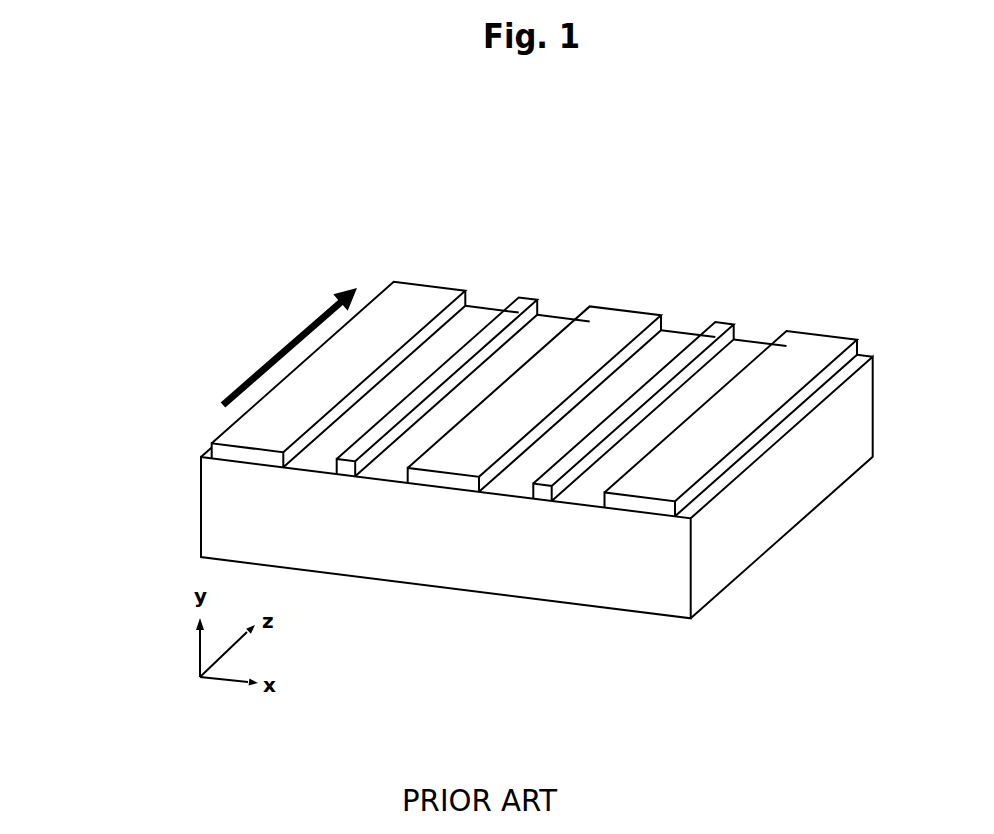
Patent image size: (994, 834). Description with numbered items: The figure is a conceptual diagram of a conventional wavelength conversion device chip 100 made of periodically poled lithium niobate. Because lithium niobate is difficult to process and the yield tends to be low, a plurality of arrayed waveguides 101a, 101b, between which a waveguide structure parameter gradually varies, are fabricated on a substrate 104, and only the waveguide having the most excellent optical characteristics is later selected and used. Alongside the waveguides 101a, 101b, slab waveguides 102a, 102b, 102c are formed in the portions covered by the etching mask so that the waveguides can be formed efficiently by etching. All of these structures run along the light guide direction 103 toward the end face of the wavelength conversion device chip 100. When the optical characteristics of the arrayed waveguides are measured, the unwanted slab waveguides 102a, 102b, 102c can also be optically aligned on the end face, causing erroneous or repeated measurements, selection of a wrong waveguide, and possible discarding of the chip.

The wavelength conversion device chip 100 is at (488, 313).
The waveguide 101a is at (518, 300).
The waveguide 101b is at (713, 318).
The slab waveguide 102a is at (425, 292).
The slab waveguide 102b is at (623, 318).
The slab waveguide 102c is at (808, 328).
The light guide direction arrow 103 is at (292, 347).
The substrate 104 is at (483, 572).